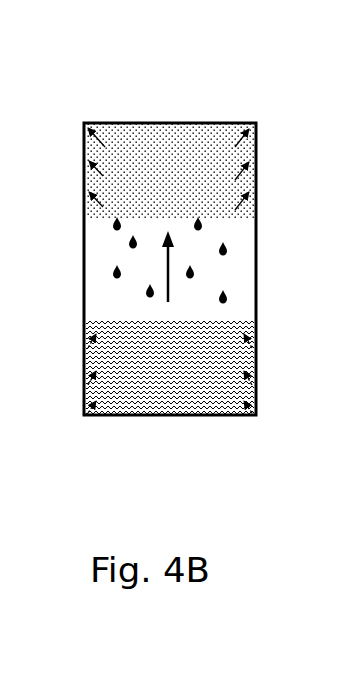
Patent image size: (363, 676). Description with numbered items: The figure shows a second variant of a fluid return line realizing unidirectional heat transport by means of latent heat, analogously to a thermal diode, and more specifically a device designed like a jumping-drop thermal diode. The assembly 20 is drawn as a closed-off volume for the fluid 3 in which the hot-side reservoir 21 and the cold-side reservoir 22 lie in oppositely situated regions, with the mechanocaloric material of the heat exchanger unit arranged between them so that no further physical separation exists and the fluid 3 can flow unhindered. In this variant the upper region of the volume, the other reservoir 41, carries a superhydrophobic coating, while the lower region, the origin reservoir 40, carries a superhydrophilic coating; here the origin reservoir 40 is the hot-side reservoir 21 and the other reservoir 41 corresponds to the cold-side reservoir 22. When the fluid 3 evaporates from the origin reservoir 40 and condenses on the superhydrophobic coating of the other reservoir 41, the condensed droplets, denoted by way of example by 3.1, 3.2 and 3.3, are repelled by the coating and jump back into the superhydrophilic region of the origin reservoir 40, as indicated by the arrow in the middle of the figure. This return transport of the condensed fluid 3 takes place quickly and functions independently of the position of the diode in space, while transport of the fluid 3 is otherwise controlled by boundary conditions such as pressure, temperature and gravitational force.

The cartridge body 20 is at (261, 111).
The cold-side reservoir 22 is at (182, 128).
The other reservoir 41 is at (137, 128).
The hot-side reservoir 21 is at (172, 397).
The origin reservoir 40 is at (210, 397).
The fluid 3 is at (127, 398).
The condensed droplet 3.1 is at (113, 227).
The condensed droplet 3.2 is at (129, 245).
The condensed droplet 3.3 is at (112, 276).